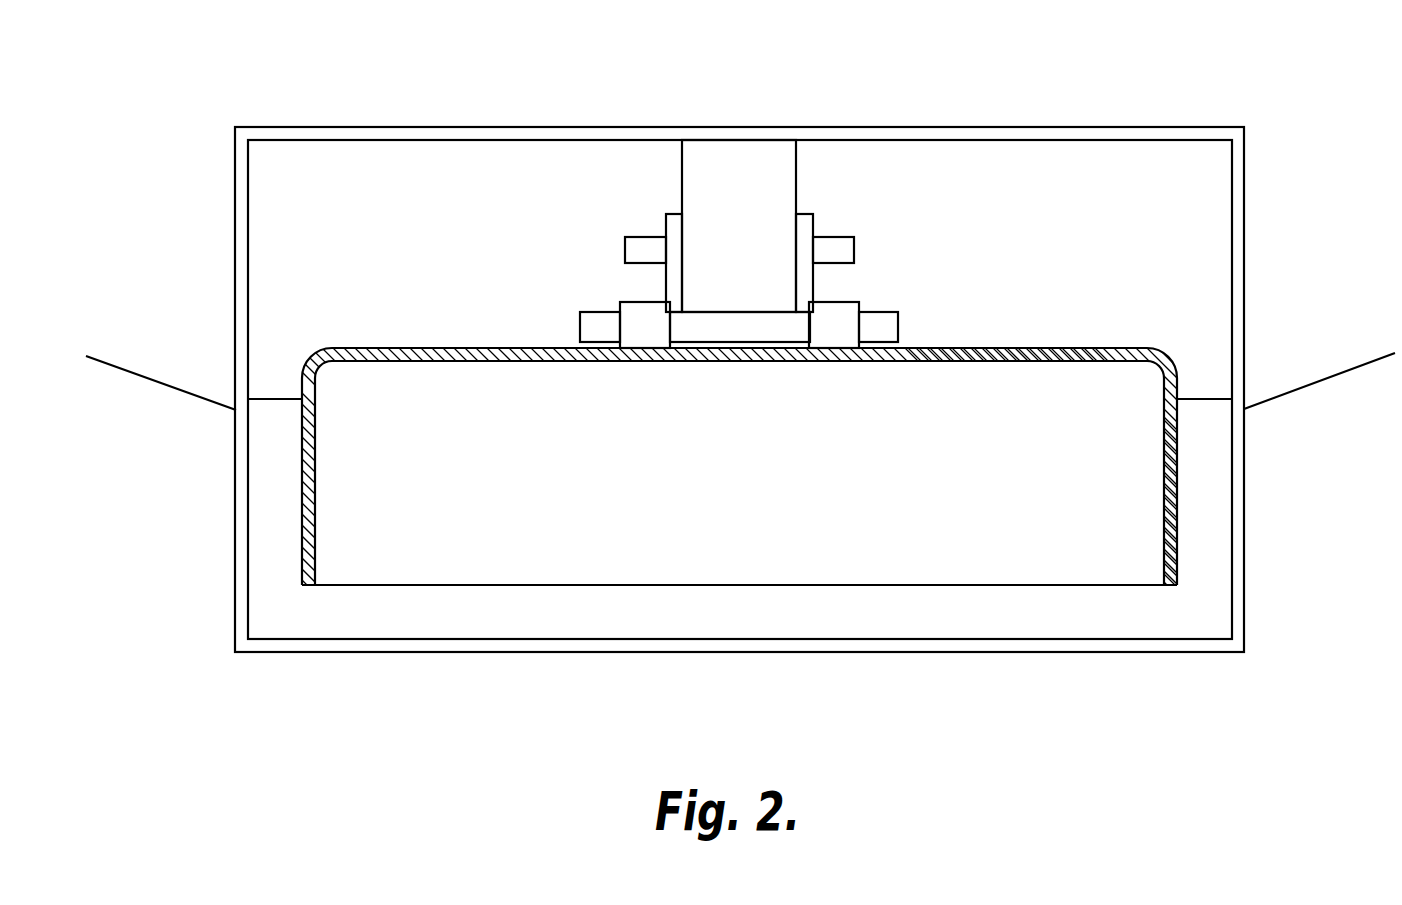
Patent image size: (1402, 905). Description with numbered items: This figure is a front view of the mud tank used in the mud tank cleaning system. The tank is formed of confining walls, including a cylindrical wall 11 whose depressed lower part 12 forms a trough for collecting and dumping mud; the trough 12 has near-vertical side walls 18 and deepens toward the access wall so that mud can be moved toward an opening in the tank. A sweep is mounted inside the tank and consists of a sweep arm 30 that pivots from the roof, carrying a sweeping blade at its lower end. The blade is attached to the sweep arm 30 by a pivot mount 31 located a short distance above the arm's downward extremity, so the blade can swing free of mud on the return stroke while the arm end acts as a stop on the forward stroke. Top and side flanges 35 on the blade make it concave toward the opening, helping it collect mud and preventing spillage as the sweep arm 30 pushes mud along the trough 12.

The cylindrical wall 11 is at (160, 385).
The lower part 12 is at (710, 652).
The side walls 18 is at (236, 570).
The sweep arm 30 is at (682, 193).
The pivot mount 31 is at (898, 318).
The flanges 35 is at (1100, 348).